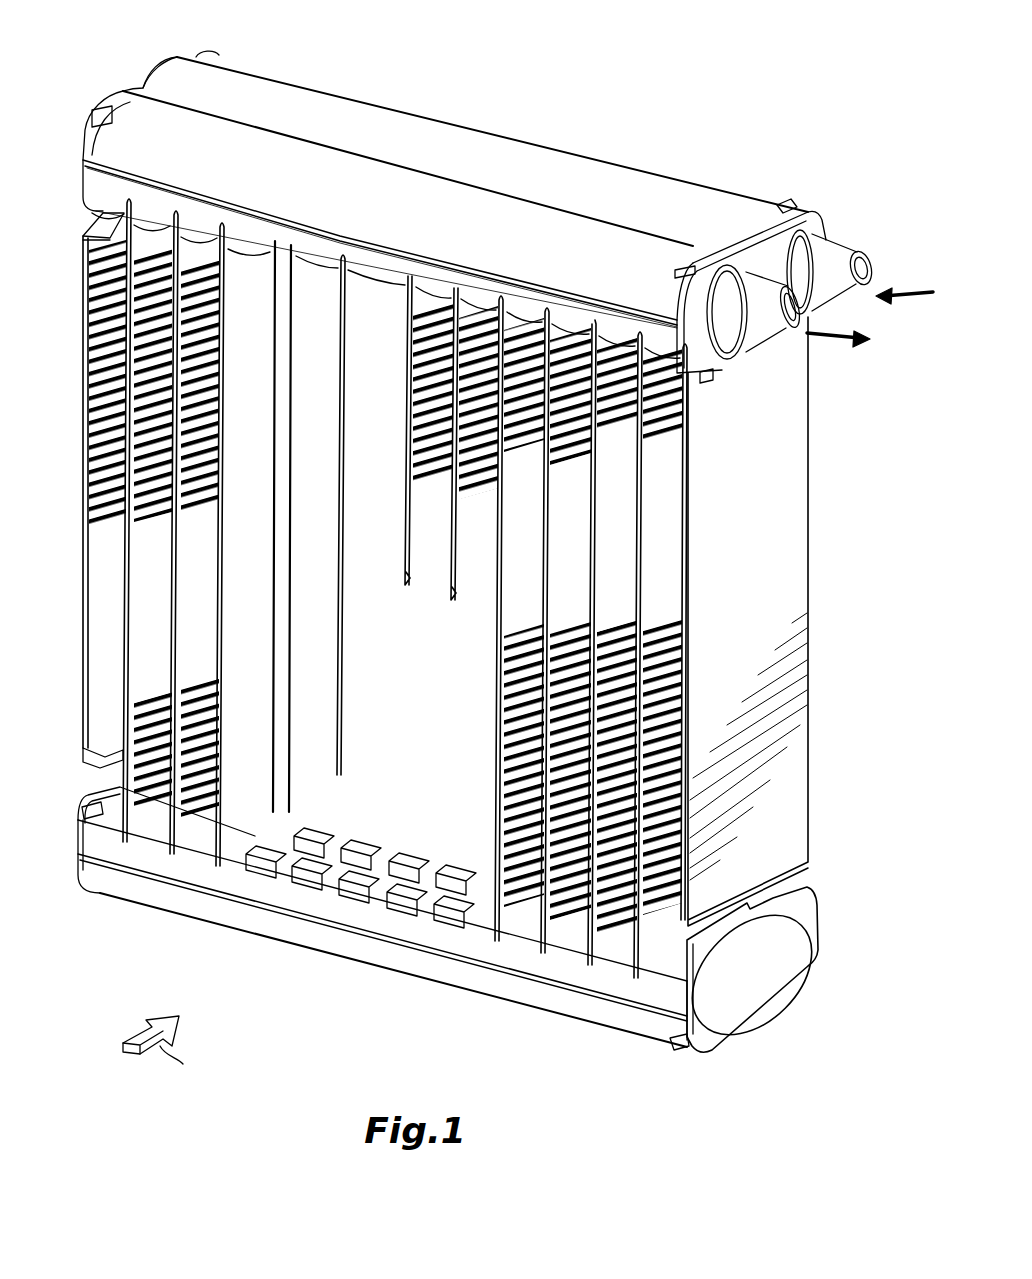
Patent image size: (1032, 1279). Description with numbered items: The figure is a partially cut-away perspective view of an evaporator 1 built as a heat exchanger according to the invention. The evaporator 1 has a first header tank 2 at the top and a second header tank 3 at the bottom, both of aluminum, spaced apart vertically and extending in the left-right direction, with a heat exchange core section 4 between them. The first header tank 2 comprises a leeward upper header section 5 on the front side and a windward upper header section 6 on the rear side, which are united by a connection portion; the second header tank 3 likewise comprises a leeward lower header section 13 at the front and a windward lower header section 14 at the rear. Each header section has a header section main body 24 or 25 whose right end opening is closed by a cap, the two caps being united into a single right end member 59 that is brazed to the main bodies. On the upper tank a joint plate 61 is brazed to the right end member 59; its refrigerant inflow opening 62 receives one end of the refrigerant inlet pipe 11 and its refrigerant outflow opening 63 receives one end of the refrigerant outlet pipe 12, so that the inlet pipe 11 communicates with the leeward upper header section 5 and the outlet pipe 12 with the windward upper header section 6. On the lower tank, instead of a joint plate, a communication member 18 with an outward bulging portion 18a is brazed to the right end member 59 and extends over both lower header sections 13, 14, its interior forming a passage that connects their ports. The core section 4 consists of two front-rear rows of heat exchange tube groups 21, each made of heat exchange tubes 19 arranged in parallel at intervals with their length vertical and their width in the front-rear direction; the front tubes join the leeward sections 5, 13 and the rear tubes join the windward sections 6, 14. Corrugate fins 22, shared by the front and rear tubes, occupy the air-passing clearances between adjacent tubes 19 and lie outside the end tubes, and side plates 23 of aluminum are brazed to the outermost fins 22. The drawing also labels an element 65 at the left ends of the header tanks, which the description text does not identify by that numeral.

The evaporator 1 is at (740, 96).
The first header tank 2 is at (454, 92).
The second header tank 3 is at (444, 1006).
The heat exchange core section 4 is at (660, 577).
The leeward upper header section 5 is at (583, 162).
The windward upper header section 6 is at (373, 160).
The refrigerant inlet pipe 11 is at (858, 246).
The refrigerant outlet pipe 12 is at (780, 358).
The leeward lower header section 13 is at (350, 778).
The windward lower header section 14 is at (293, 935).
The communication member 18 is at (715, 1045).
The outward bulging portion 18a is at (775, 985).
The heat exchange tubes 19 is at (150, 606).
The heat exchange tube groups 21 is at (267, 662).
The corrugate fins 22 is at (108, 521).
The side plates 23 is at (83, 663).
The header section main body 24 is at (520, 158).
The header section main body 25 is at (273, 140).
The right end member 59 is at (780, 207).
The joint plate 61 is at (813, 212).
The refrigerant inflow opening 62 is at (822, 236).
The refrigerant outflow opening 63 is at (727, 348).
The tab 65 is at (145, 90).